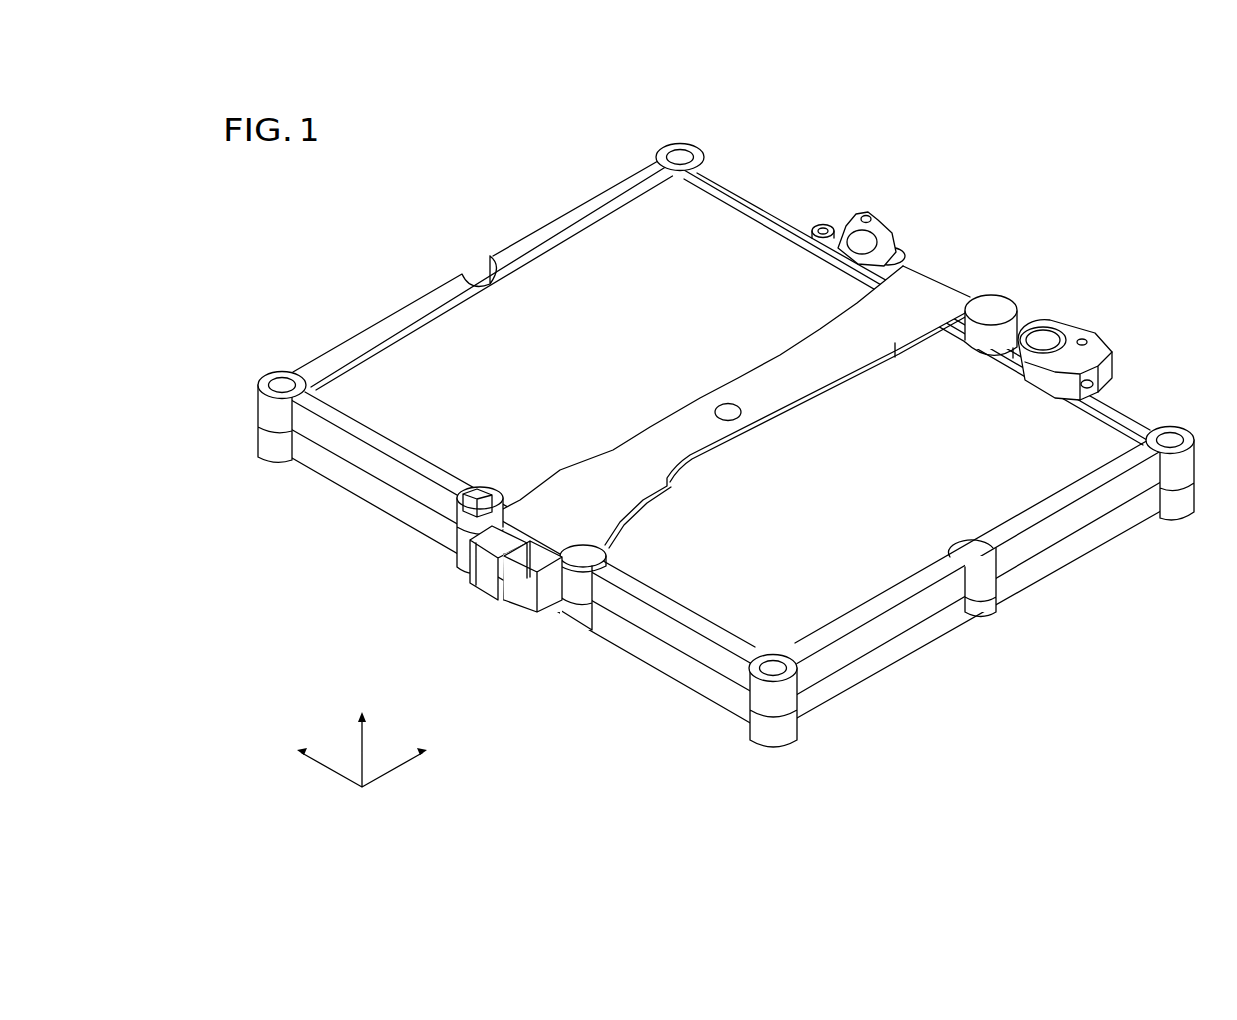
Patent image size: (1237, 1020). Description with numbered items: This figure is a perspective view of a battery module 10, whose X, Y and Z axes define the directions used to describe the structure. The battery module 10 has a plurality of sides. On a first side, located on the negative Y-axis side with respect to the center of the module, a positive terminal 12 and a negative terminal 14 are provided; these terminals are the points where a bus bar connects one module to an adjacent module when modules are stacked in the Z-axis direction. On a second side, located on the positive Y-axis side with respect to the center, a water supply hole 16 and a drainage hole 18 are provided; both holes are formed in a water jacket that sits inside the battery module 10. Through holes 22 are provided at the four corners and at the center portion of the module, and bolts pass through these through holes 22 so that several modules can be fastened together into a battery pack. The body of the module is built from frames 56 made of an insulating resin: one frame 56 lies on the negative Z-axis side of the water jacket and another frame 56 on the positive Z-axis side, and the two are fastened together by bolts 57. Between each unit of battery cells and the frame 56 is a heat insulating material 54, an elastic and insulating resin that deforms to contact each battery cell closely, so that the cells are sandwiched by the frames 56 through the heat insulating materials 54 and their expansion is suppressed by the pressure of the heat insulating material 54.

The battery module 10 is at (837, 104).
The positive terminal 12 is at (491, 568).
The negative terminal 14 is at (535, 560).
The water supply hole 16 is at (875, 240).
The drainage hole 18 is at (1053, 337).
The through holes 22 is at (677, 156).
The heat insulating material 54 is at (405, 367).
The frame 56 is at (877, 663).
The bolts 57 is at (476, 502).